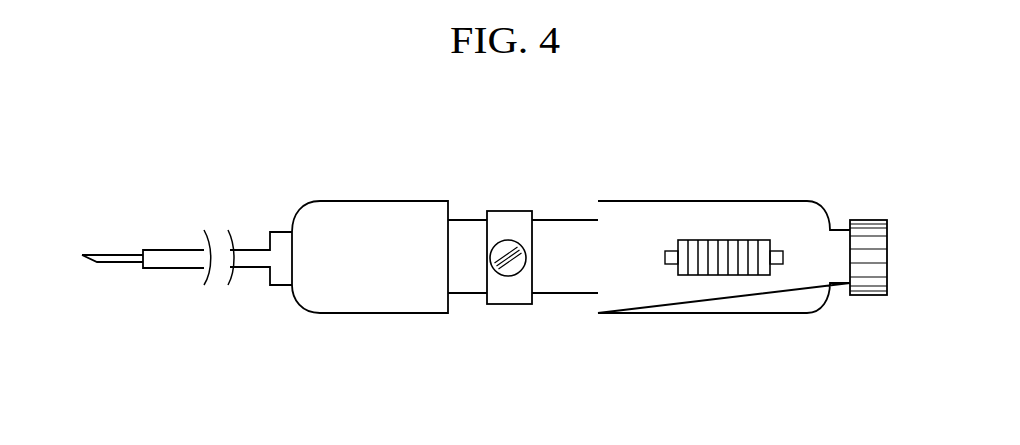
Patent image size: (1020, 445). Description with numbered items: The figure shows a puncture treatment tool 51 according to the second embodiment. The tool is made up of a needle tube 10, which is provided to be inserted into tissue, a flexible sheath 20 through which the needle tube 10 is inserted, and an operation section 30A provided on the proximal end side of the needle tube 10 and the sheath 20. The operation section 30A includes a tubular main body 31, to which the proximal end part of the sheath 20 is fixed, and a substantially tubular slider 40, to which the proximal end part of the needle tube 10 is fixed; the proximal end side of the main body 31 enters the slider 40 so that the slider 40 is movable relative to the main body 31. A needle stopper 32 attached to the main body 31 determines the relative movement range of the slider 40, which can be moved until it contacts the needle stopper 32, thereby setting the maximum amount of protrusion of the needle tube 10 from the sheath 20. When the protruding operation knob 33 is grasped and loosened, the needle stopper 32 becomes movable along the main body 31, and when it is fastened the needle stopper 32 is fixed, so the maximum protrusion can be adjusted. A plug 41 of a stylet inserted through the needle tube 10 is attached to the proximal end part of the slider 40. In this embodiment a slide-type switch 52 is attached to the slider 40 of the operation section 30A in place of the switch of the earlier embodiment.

The needle tube 10 is at (128, 255).
The flexible sheath 20 is at (253, 252).
The operation section 30A is at (467, 325).
The main body 31 is at (574, 281).
The needle stopper 32 is at (514, 211).
The operation knob 33 is at (503, 245).
The slider 40 is at (750, 302).
The plug 41 is at (870, 230).
The puncture treatment tool 51 is at (742, 217).
The slide-type switch 52 is at (747, 240).